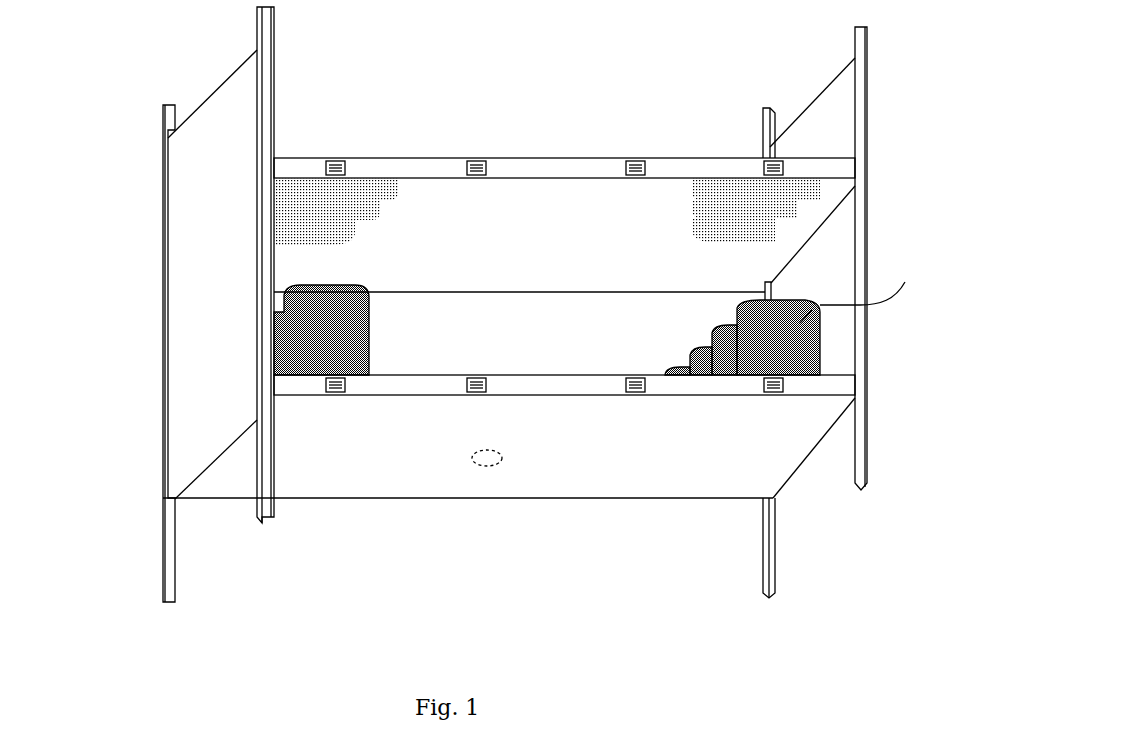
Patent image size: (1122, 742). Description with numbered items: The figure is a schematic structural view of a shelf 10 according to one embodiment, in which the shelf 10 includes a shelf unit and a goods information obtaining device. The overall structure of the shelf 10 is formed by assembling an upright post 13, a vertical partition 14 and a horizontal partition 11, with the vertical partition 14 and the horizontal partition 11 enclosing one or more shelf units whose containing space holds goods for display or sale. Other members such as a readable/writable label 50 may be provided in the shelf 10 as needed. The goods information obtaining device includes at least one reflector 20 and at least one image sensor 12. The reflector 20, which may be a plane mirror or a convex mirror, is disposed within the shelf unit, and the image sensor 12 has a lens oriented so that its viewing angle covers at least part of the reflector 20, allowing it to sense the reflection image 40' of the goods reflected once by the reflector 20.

The shelf 10 is at (134, 271).
The horizontal partition 11 is at (687, 167).
The image sensor 12 is at (485, 458).
The upright post 13 is at (855, 92).
The vertical partition 14 is at (223, 120).
The reflector 20 is at (517, 220).
The reflection image 40' is at (589, 226).
The readable/writable label 50 is at (475, 160).